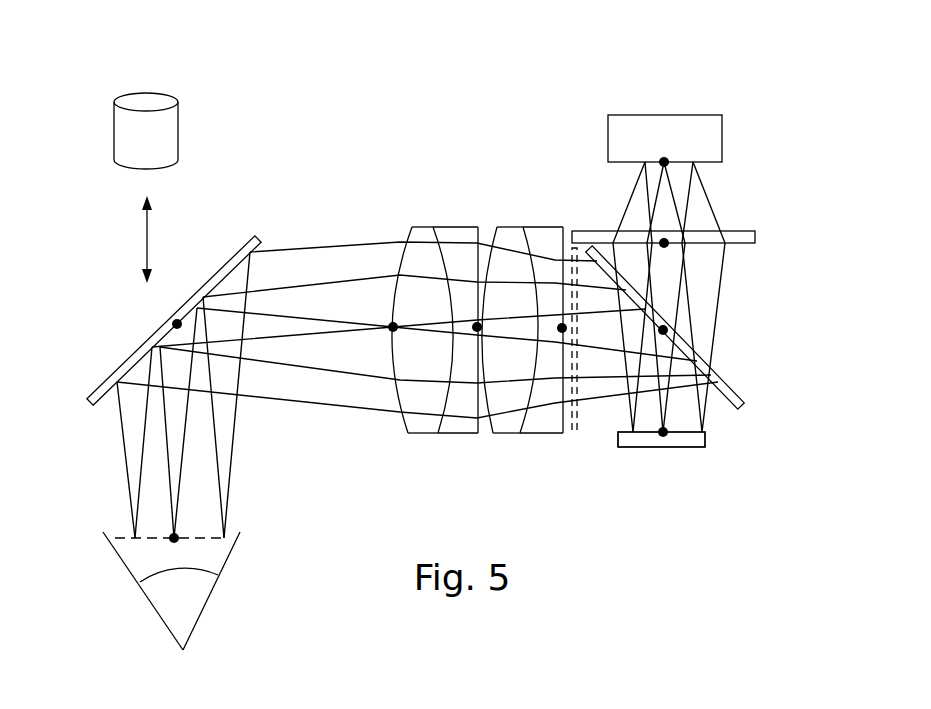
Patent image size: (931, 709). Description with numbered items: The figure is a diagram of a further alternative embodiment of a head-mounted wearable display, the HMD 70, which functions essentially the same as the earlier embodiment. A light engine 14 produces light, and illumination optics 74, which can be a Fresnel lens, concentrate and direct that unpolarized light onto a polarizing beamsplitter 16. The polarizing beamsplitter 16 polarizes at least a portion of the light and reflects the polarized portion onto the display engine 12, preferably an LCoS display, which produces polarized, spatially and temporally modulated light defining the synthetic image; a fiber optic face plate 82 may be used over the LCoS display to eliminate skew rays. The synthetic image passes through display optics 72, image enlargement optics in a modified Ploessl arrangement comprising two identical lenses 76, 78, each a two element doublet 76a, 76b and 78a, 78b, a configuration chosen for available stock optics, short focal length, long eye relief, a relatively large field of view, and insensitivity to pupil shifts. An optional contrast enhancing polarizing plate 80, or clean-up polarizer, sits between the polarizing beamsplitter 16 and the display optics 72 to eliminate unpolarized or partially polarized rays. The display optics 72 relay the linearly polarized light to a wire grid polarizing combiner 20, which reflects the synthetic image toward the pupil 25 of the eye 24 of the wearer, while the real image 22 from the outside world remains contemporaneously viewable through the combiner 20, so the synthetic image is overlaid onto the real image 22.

The HMD 70 is at (545, 79).
The display optics 72 is at (370, 167).
The lens 76 is at (421, 434).
The doublet element 76a is at (423, 226).
The doublet element 76b is at (456, 227).
The lens 78 is at (505, 434).
The doublet element 78a is at (510, 227).
The doublet element 78b is at (538, 229).
The contrast enhancing polarizing plate 80 is at (575, 436).
The illumination optics 74 is at (748, 247).
The light engine 14 is at (673, 146).
The polarizing beamsplitter 16 is at (739, 390).
The fiber optic face plate 82 is at (708, 432).
The display engine 12 is at (663, 448).
The wire grid polarizing combiner 20 is at (103, 387).
The real image 22 is at (132, 146).
The eye 24 is at (165, 684).
The pupil 25 is at (163, 609).